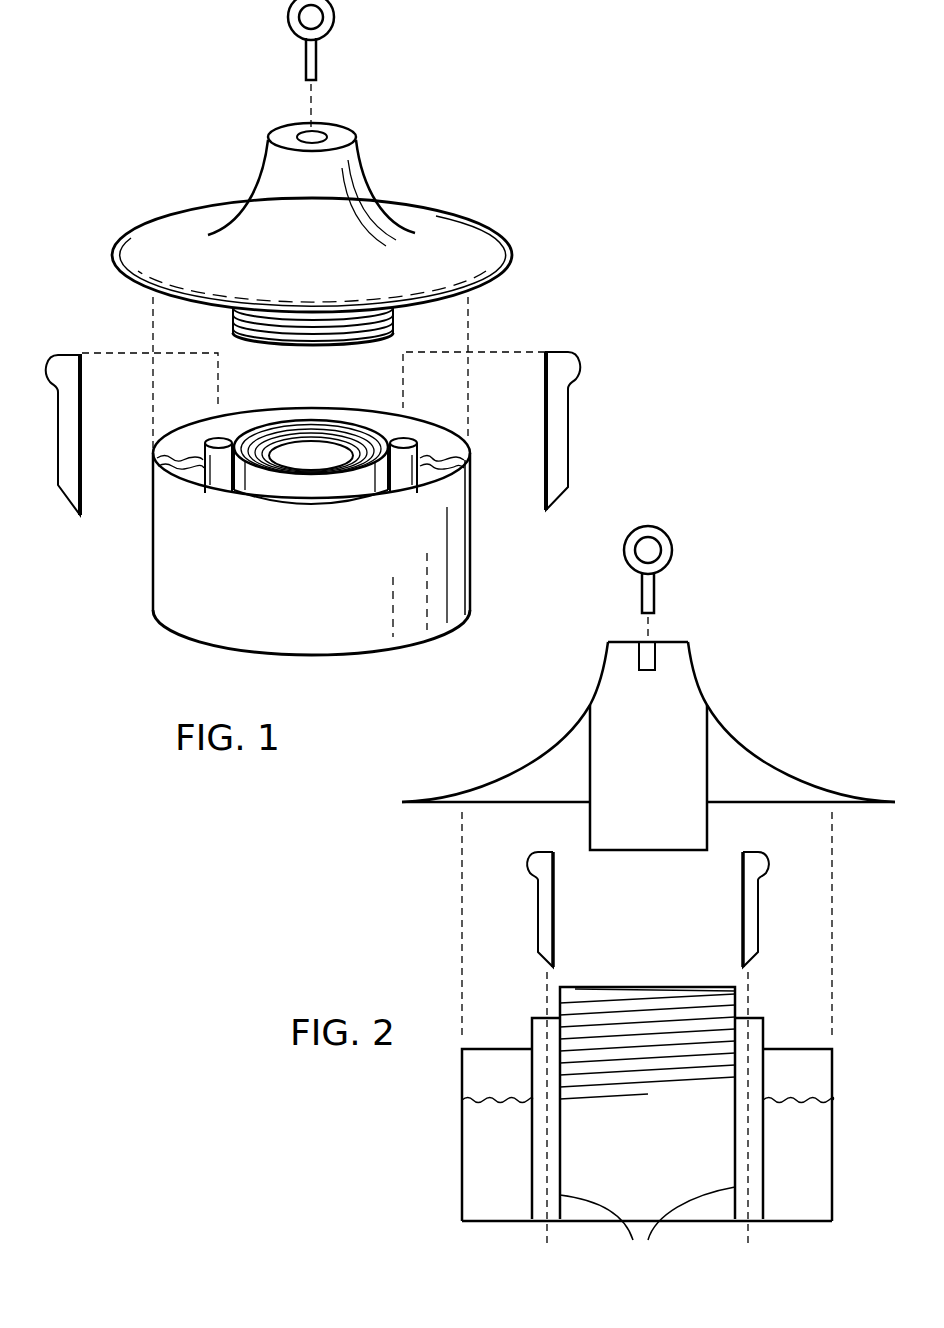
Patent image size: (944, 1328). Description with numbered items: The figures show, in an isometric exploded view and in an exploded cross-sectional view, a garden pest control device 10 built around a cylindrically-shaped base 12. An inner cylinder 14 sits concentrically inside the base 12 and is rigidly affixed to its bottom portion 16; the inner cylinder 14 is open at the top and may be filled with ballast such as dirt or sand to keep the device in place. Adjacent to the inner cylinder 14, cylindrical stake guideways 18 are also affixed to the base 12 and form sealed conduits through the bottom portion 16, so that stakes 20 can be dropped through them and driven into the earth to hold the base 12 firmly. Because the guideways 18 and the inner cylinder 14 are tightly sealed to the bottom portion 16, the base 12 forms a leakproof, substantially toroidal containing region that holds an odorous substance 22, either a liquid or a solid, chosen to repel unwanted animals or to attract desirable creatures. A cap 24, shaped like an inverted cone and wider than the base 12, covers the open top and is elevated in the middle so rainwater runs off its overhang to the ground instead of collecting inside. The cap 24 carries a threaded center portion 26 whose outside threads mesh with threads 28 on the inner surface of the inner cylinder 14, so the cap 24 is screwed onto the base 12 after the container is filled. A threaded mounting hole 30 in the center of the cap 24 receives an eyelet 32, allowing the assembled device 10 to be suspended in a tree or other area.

In FIG. 1, the garden pest control device 10 is at (172, 662).
In FIG. 2, the garden pest control device 10 is at (437, 1168).
In FIG. 1, the cylindrically-shaped base 12 is at (437, 592).
In FIG. 2, the cylindrically-shaped base 12 is at (647, 1135).
In FIG. 1, the inner cylinder 14 is at (309, 496).
In FIG. 2, the inner cylinder 14 is at (658, 1164).
In FIG. 1, the bottom portion 16 is at (363, 652).
In FIG. 2, the bottom portion 16 is at (800, 1223).
In FIG. 1, the stake guideways 18 is at (390, 495).
In FIG. 2, the stake guideways 18 is at (647, 1228).
In FIG. 1, the stakes 20 is at (82, 481).
In FIG. 2, the stakes 20 is at (743, 905).
In FIG. 1, the odorous substance 22 is at (440, 458).
In FIG. 2, the odorous substance 22 is at (809, 1164).
In FIG. 1, the cap 24 is at (452, 227).
In FIG. 2, the cap 24 is at (790, 784).
In FIG. 1, the threaded center portion 26 is at (272, 342).
In FIG. 2, the threaded center portion 26 is at (657, 794).
In FIG. 1, the threads 28 is at (326, 432).
In FIG. 2, the threads 28 is at (663, 985).
In FIG. 1, the threaded mounting hole 30 is at (314, 135).
In FIG. 2, the threaded mounting hole 30 is at (656, 655).
In FIG. 1, the eyelet 32 is at (318, 53).
In FIG. 2, the eyelet 32 is at (657, 588).